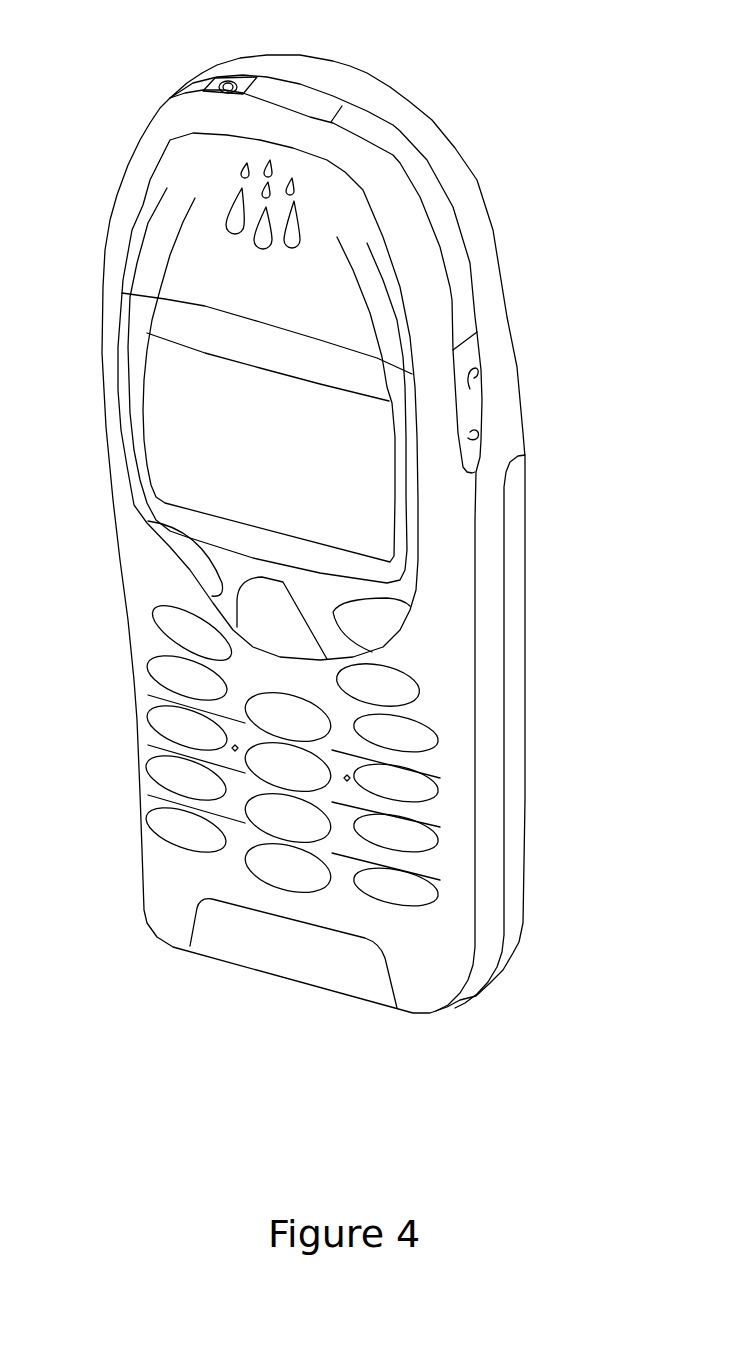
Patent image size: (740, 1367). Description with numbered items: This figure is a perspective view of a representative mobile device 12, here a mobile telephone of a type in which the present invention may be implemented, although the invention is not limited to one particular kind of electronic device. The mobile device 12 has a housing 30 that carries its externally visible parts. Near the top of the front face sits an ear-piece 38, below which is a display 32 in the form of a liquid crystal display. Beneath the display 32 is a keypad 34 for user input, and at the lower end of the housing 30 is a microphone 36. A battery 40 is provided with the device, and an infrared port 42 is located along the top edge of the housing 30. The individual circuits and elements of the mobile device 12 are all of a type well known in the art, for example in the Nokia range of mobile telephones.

The mobile device 12 is at (456, 58).
The housing 30 is at (483, 252).
The display 32 is at (363, 498).
The keypad 34 is at (326, 801).
The microphone 36 is at (220, 938).
The ear-piece 38 is at (257, 201).
The battery 40 is at (534, 731).
The infrared port 42 is at (294, 98).